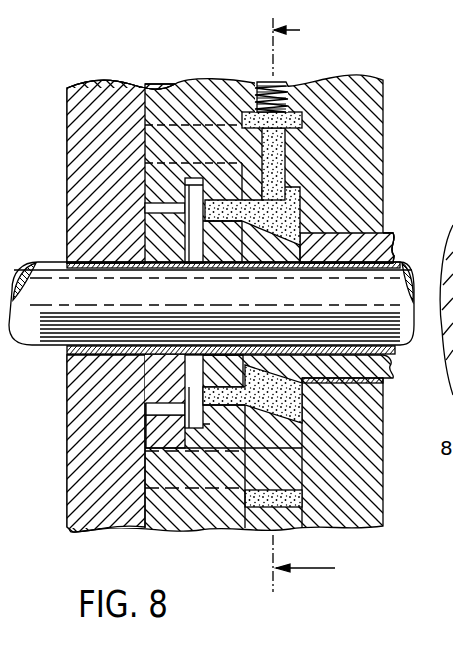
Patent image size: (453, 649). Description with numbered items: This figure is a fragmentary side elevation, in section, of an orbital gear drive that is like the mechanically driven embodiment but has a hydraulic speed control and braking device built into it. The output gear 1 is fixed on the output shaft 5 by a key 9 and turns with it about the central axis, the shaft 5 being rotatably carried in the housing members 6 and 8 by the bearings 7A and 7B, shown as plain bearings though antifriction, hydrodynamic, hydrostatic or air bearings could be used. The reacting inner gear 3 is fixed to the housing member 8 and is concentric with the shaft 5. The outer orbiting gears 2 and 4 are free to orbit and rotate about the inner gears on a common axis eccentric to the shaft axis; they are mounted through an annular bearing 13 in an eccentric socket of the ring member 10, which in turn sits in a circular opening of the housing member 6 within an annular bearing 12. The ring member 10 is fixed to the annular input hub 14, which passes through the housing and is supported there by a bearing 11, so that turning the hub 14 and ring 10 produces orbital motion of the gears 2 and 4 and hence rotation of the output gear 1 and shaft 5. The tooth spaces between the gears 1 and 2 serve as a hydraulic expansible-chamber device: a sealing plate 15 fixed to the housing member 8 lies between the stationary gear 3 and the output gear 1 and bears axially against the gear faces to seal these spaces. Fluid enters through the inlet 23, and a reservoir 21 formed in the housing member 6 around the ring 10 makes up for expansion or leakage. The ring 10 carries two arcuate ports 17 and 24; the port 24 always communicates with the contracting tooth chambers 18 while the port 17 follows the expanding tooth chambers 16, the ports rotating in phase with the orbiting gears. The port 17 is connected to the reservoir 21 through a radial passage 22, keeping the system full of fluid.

The output gear 1 is at (212, 352).
The outer orbiting gear 2 is at (237, 432).
The reacting inner gear 3 is at (167, 389).
The outer orbiting gear 4 is at (162, 432).
The output shaft 5 is at (365, 307).
The housing member 6 is at (383, 431).
The bearing 7A is at (67, 262).
The bearing 7B is at (393, 358).
The housing member 8 is at (85, 456).
The key 9 is at (313, 305).
The ring member 10 is at (452, 163).
The bearing 11 is at (310, 230).
The annular bearing 12 is at (145, 125).
The annular bearing 13 is at (145, 163).
The input hub 14 is at (378, 256).
The sealing plate 15 is at (192, 235).
The tooth chambers 16 is at (200, 207).
The arcuate port 17 is at (295, 207).
The tooth chambers 18 is at (223, 372).
The reservoir 21 is at (452, 103).
The radial passage 22 is at (273, 158).
The inlet 23 is at (275, 80).
The arcuate port 24 is at (268, 382).